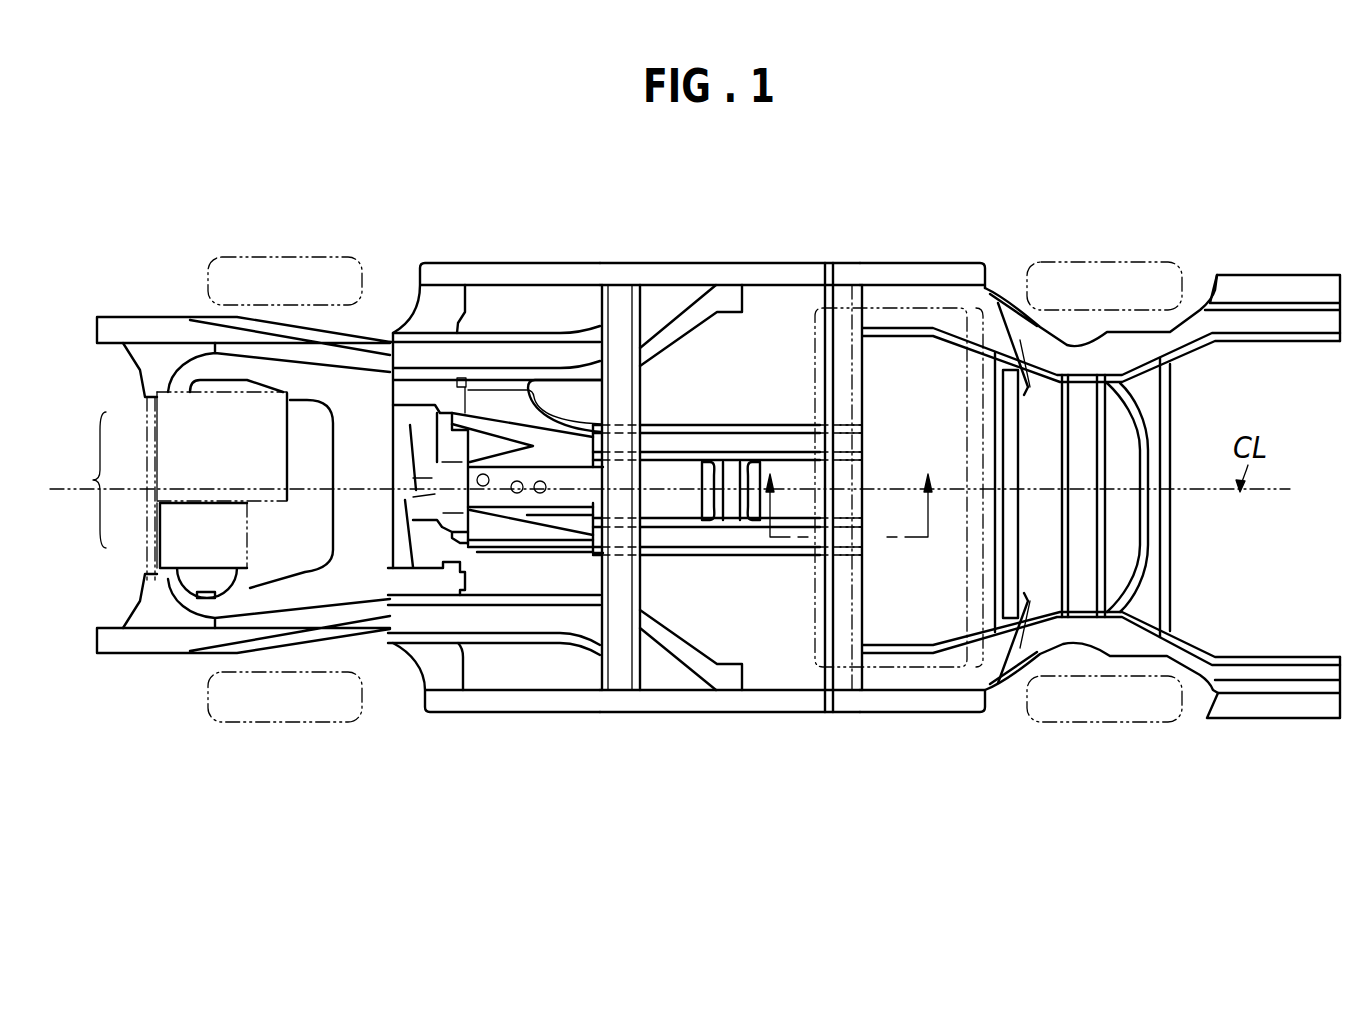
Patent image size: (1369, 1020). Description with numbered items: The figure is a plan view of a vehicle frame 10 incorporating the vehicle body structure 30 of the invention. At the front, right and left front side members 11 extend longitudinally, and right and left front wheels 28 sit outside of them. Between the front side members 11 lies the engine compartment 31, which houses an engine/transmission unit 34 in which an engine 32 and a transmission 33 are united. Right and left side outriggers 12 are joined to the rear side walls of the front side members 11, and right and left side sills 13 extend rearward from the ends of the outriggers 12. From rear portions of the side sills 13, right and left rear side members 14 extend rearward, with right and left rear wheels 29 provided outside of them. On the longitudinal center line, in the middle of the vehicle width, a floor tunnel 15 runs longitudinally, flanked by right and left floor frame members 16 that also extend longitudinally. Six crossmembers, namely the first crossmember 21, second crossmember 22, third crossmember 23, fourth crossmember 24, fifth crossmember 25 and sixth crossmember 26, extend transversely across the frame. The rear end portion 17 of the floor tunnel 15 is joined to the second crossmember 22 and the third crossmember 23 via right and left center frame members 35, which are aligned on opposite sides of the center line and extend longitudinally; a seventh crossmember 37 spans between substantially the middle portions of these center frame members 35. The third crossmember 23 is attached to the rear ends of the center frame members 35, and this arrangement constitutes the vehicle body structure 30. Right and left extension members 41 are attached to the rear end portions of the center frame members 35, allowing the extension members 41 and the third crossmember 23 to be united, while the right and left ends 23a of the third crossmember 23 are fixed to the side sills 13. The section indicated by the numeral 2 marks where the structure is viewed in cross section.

The vehicle frame 10 is at (158, 197).
The front side member 11 is at (158, 332).
The side outrigger 12 is at (443, 302).
The side sill 13 is at (732, 265).
The rear side member 14 is at (957, 263).
The floor tunnel 15 is at (500, 507).
The floor frame member 16 is at (532, 335).
The rear end portion 17 is at (578, 517).
The first crossmember 21 is at (410, 440).
The second crossmember 22 is at (620, 302).
The third crossmember 23 is at (850, 268).
The end of the third crossmember 23a is at (830, 268).
The fourth crossmember 24 is at (1008, 438).
The fifth crossmember 25 is at (1093, 425).
The sixth crossmember 26 is at (1160, 555).
The front wheel 28 is at (268, 257).
The rear wheel 29 is at (1105, 262).
The vehicle body structure 30 is at (870, 400).
The engine compartment 31 is at (297, 551).
The engine 32 is at (150, 440).
The transmission 33 is at (157, 530).
The engine/transmission unit 34 is at (82, 480).
The center frame member 35 is at (762, 425).
The seventh crossmember 37 is at (717, 462).
The extension member 41 is at (840, 432).
The section line 2 is at (848, 549).